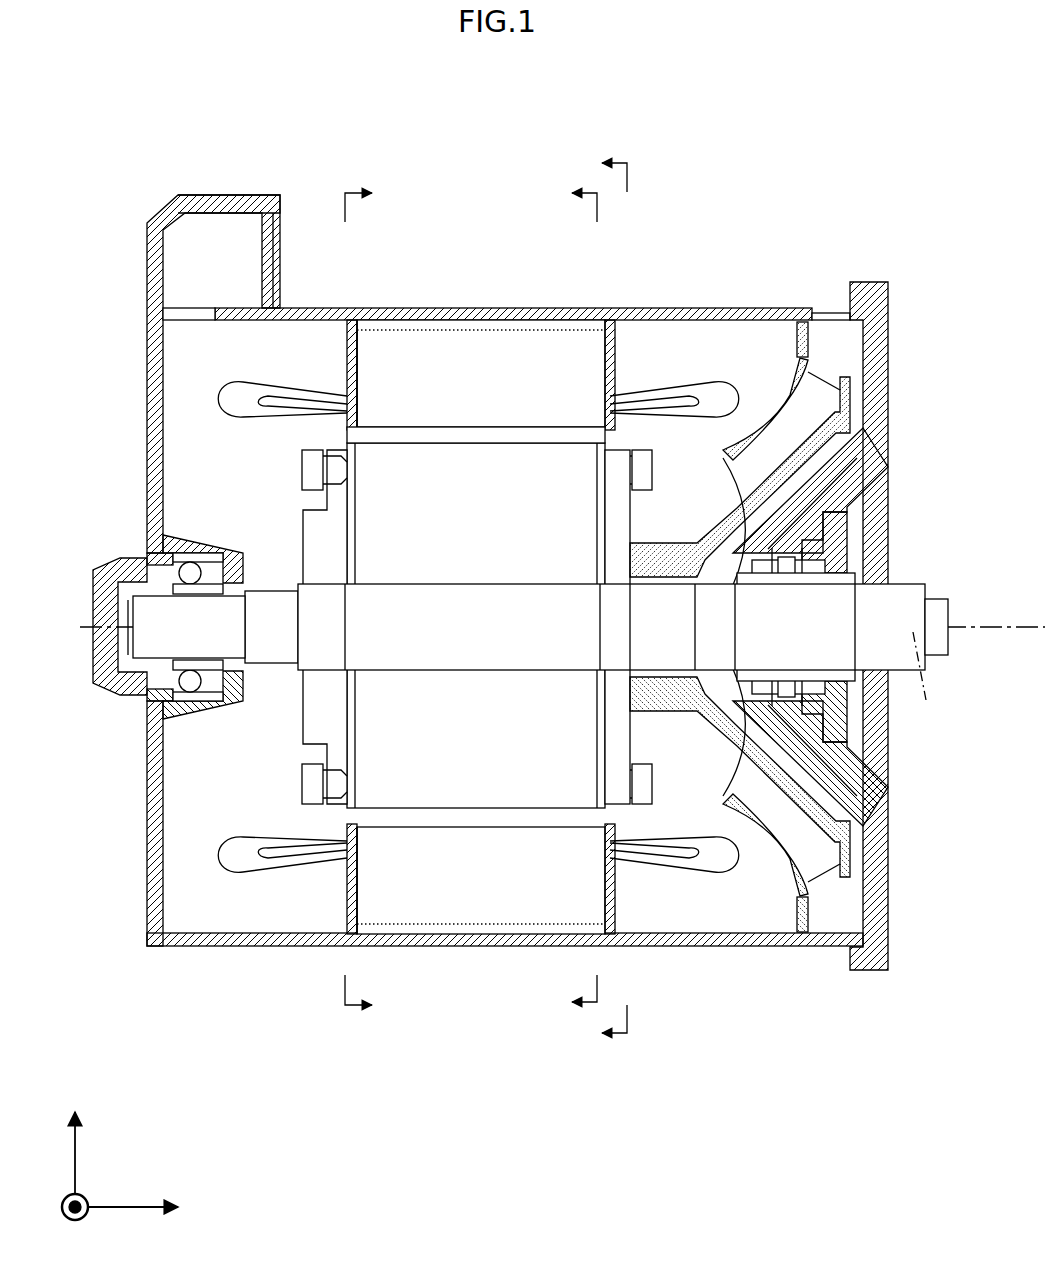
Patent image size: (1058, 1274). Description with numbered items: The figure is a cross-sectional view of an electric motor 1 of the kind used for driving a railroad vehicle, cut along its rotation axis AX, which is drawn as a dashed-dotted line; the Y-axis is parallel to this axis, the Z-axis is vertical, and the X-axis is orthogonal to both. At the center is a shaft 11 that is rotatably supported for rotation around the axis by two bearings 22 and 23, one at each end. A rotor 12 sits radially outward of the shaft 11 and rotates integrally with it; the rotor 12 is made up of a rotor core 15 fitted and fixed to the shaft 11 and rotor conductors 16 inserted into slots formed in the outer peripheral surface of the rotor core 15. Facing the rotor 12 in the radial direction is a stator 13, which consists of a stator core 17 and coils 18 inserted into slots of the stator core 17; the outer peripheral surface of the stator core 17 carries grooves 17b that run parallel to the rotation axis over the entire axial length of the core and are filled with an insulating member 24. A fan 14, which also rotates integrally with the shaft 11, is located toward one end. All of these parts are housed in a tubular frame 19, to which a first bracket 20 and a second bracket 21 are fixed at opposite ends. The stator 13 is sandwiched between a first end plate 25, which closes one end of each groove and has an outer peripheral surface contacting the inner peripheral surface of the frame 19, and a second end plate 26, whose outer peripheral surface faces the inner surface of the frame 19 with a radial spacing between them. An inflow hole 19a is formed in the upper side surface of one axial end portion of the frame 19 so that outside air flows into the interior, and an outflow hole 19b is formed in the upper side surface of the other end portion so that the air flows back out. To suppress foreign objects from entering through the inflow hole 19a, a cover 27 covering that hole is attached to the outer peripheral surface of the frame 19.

The electric motor 1 is at (616, 130).
The shaft 11 is at (890, 602).
The rotor 12 is at (298, 550).
The stator 13 is at (338, 428).
The fan 14 is at (712, 495).
The rotor core 15 is at (512, 478).
The rotor conductors 16 is at (628, 428).
The stator core 17 is at (455, 348).
The grooves 17b is at (505, 316).
The coils 18 is at (272, 395).
The frame 19 is at (323, 308).
The inflow hole 19a is at (205, 306).
The outflow hole 19b is at (826, 306).
The first bracket 20 is at (878, 430).
The second bracket 21 is at (150, 532).
The bearing 22 is at (793, 690).
The bearing 23 is at (170, 575).
The insulating member 24 is at (386, 318).
The first end plate 25 is at (352, 318).
The second end plate 26 is at (604, 318).
The cover 27 is at (231, 200).